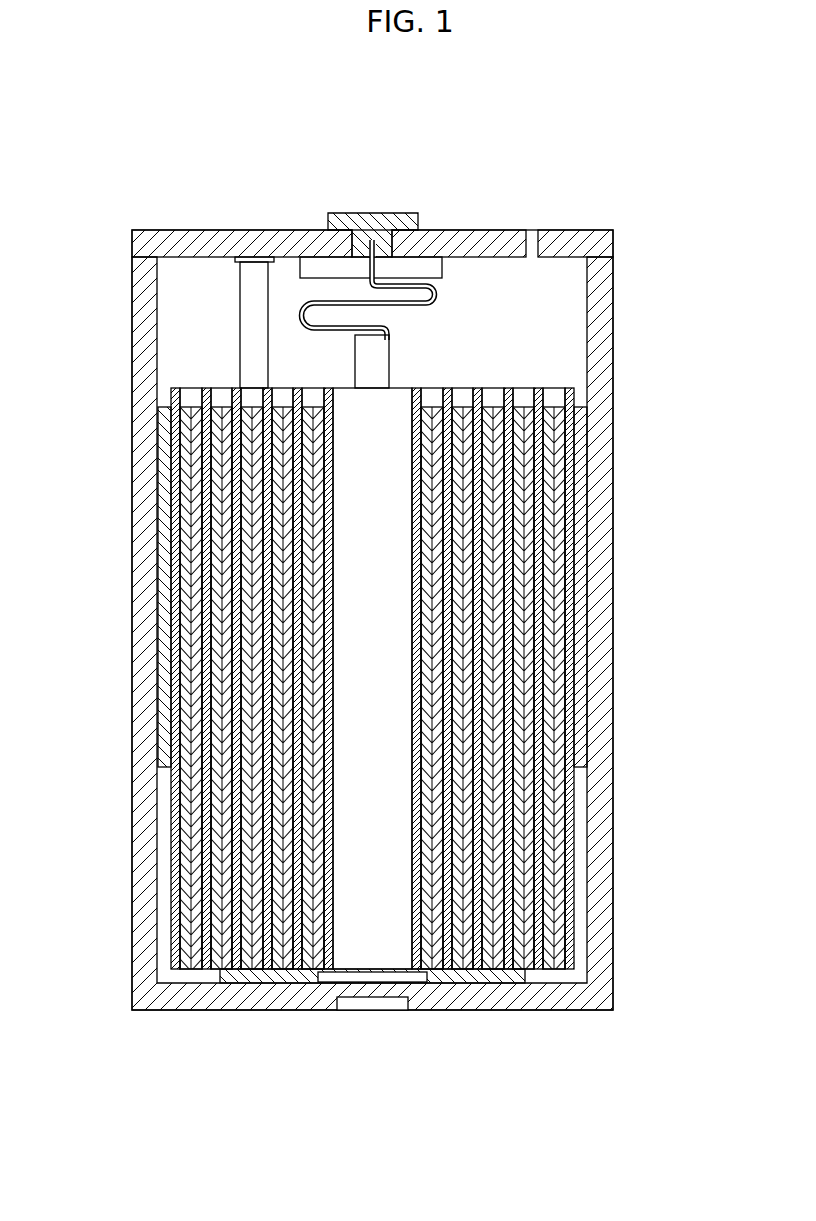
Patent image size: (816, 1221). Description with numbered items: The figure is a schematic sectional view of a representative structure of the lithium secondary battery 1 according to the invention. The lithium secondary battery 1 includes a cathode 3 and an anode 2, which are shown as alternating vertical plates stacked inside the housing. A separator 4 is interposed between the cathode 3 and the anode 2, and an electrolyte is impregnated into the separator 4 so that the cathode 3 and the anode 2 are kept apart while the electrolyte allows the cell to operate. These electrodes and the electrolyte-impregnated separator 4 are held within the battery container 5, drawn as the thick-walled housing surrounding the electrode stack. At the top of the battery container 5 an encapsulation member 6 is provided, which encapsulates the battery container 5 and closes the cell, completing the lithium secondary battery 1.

The lithium secondary battery 1 is at (403, 203).
The anode 2 is at (553, 848).
The cathode 3 is at (212, 856).
The separator 4 is at (180, 916).
The battery container 5 is at (142, 319).
The encapsulation member 6 is at (331, 212).